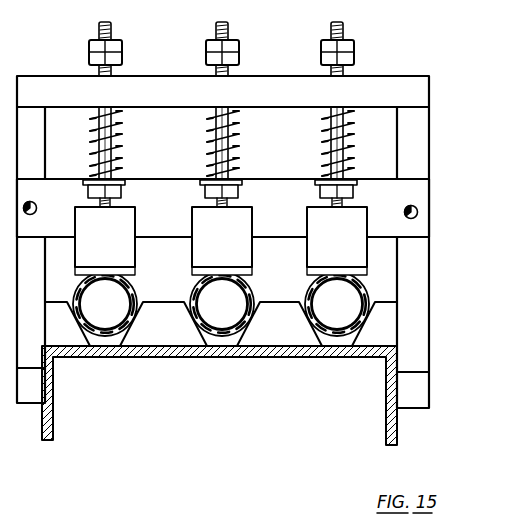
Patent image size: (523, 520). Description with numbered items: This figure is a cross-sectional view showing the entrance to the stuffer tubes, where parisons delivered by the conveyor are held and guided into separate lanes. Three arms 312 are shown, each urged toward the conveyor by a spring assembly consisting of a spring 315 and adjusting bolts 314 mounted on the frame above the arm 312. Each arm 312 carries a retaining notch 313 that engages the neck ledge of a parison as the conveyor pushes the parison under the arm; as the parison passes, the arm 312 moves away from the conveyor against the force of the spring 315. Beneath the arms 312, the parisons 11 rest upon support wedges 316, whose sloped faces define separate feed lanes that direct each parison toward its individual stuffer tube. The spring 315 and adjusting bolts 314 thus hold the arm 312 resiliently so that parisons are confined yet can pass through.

The pipe 11 is at (336, 337).
The arm 312 is at (203, 253).
The retaining notch 313 is at (367, 272).
The adjusting bolts 314 is at (117, 75).
The spring 315 is at (114, 146).
The support wedges 316 is at (157, 340).